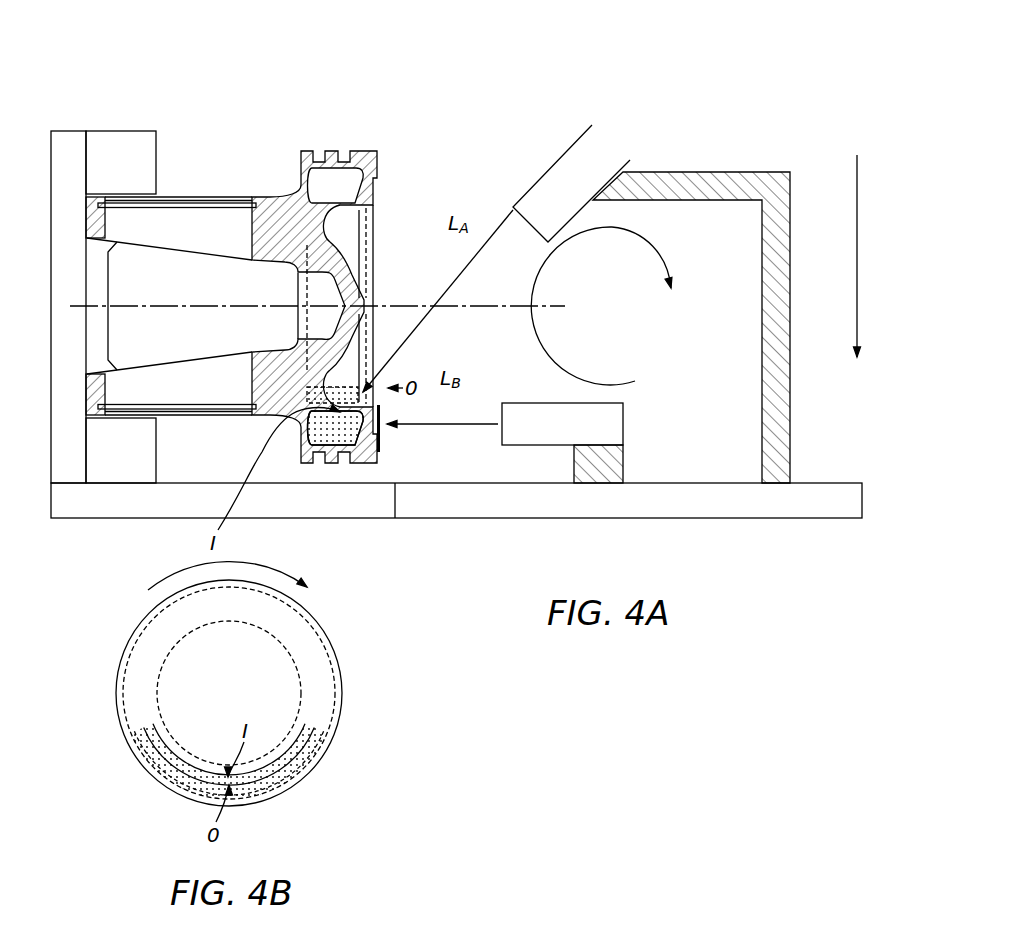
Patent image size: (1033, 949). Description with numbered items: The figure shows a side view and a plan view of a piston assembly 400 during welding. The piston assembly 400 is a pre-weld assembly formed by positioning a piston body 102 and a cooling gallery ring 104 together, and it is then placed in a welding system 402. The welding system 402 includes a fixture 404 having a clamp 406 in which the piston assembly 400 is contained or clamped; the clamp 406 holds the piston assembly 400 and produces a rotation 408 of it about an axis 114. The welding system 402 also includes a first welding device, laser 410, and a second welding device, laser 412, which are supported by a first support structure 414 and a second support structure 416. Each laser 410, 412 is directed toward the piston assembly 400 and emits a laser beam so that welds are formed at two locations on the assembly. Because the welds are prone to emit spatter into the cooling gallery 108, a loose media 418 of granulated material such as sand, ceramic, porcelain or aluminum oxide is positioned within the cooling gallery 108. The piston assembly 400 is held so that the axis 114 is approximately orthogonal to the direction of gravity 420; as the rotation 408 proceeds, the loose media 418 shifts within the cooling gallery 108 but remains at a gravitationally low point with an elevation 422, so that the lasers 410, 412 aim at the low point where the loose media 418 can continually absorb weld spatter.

In FIG. 4A, the welding system 402 is at (615, 46).
In FIG. 4A, the piston assembly 400 is at (393, 126).
In FIG. 4A, the fixture 404 is at (68, 137).
In FIG. 4A, the clamp 406 is at (133, 145).
In FIG. 4A, the cooling gallery 108 is at (345, 175).
In FIG. 4B, the cooling gallery 108 is at (302, 657).
In FIG. 4A, the piston body 102 is at (373, 190).
In FIG. 4A, the cooling gallery ring 104 is at (362, 208).
In FIG. 4A, the axis 114 is at (421, 305).
In FIG. 4A, the rotation 408 is at (600, 380).
In FIG. 4B, the rotation 408 is at (280, 572).
In FIG. 4A, the laser 410 is at (535, 410).
In FIG. 4A, the laser 412 is at (568, 164).
In FIG. 4A, the first support structure 414 is at (608, 458).
In FIG. 4A, the second support structure 416 is at (763, 180).
In FIG. 4A, the loose media 418 is at (378, 450).
In FIG. 4B, the loose media 418 is at (178, 778).
In FIG. 4A, the direction of gravity 420 is at (855, 207).
In FIG. 4A, the elevation 422 is at (394, 382).
In FIG. 4B, the elevation 422 is at (115, 728).